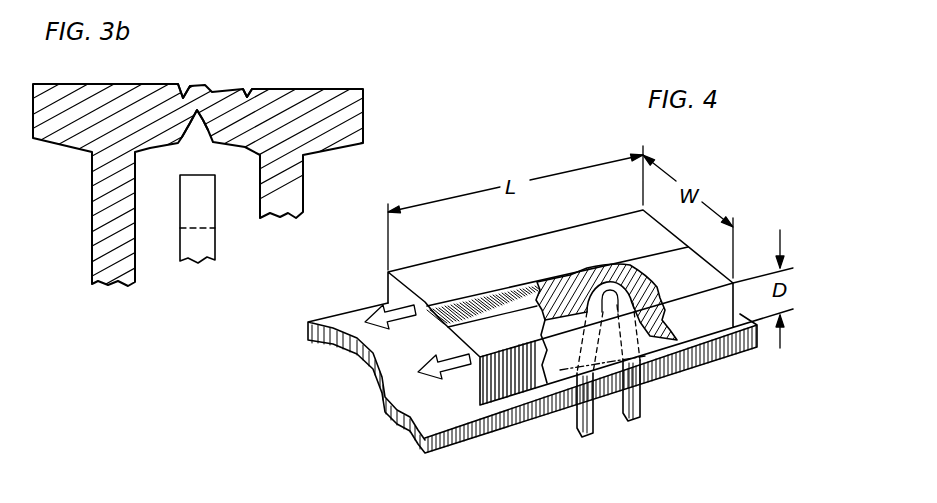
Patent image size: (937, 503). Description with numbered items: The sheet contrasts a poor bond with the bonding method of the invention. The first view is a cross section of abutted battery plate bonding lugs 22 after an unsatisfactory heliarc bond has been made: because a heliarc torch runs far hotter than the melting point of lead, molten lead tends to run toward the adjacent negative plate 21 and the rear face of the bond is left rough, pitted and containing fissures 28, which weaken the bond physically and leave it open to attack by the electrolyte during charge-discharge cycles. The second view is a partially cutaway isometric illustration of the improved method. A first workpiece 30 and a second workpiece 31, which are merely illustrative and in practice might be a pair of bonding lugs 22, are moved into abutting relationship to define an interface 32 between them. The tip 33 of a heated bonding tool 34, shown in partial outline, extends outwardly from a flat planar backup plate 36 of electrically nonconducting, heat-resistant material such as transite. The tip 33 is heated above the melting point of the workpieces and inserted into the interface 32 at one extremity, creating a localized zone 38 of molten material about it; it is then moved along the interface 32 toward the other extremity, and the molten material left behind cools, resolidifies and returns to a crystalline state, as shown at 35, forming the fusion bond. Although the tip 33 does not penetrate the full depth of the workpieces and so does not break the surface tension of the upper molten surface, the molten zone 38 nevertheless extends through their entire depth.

In FIG. 3b, the negative plate 21 is at (191, 248).
In FIG. 3b, the bonding lugs 22 is at (65, 128).
In FIG. 3b, the fissures 28 is at (247, 88).
In FIG. 4, the first workpiece 30 is at (703, 322).
In FIG. 4, the second workpiece 31 is at (597, 227).
In FIG. 4, the interface 32 is at (667, 250).
In FIG. 4, the tip 33 is at (543, 329).
In FIG. 4, the heated bonding tool 34 is at (641, 405).
In FIG. 4, the resolidified crystalline material 35 is at (455, 310).
In FIG. 4, the backup plate 36 is at (327, 335).
In FIG. 4, the localized zone of molten material 38 is at (590, 268).